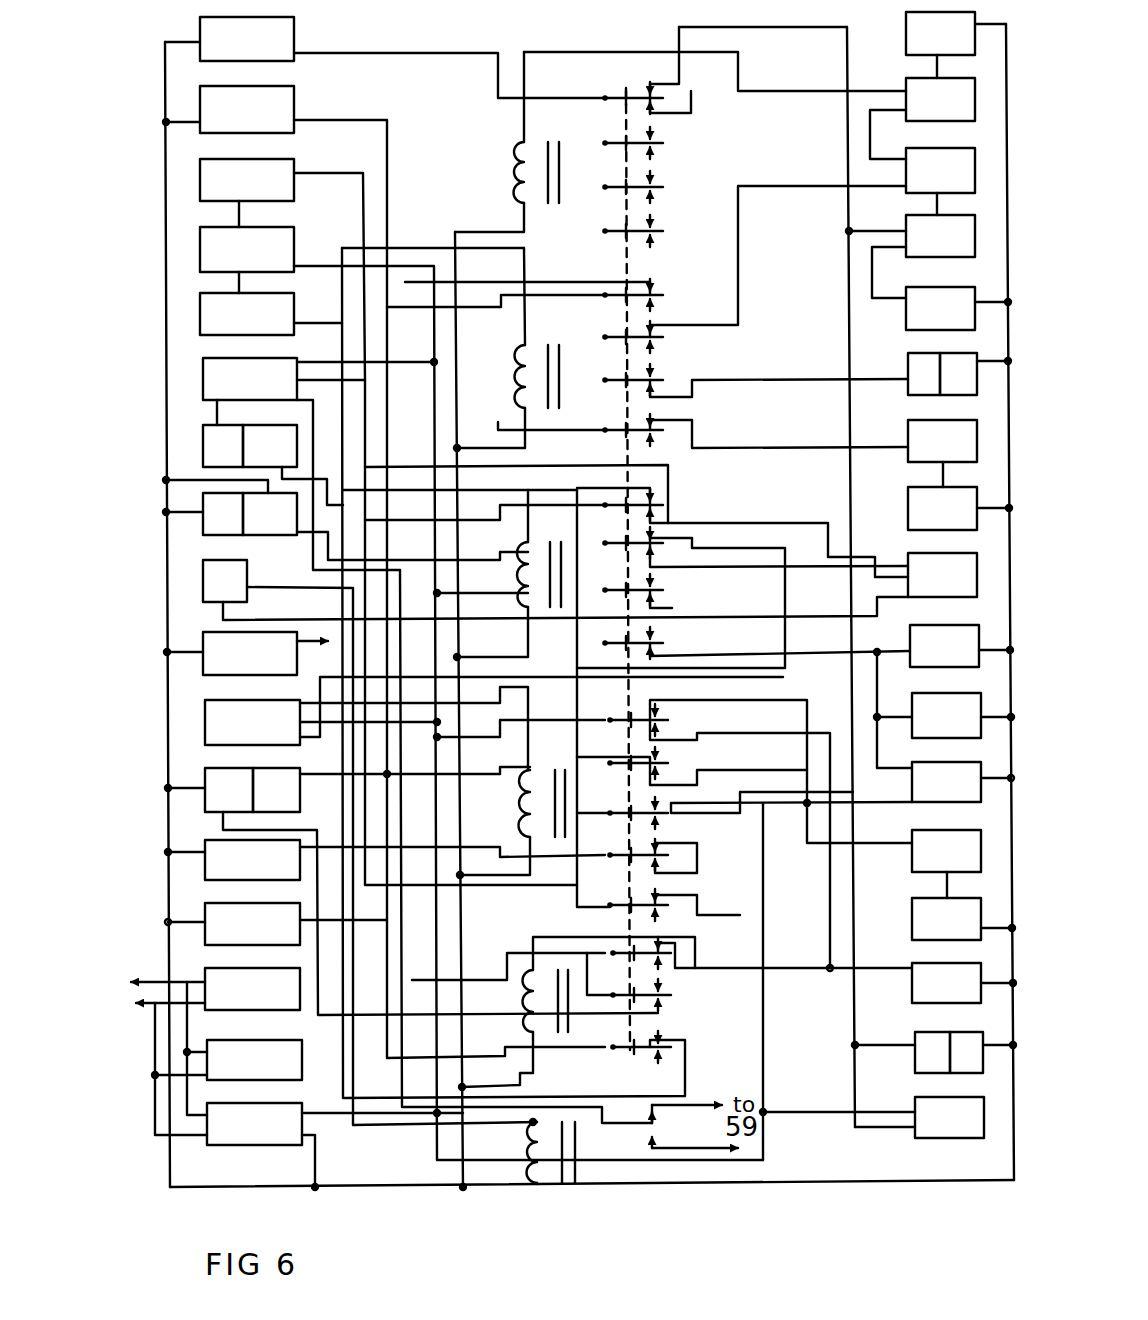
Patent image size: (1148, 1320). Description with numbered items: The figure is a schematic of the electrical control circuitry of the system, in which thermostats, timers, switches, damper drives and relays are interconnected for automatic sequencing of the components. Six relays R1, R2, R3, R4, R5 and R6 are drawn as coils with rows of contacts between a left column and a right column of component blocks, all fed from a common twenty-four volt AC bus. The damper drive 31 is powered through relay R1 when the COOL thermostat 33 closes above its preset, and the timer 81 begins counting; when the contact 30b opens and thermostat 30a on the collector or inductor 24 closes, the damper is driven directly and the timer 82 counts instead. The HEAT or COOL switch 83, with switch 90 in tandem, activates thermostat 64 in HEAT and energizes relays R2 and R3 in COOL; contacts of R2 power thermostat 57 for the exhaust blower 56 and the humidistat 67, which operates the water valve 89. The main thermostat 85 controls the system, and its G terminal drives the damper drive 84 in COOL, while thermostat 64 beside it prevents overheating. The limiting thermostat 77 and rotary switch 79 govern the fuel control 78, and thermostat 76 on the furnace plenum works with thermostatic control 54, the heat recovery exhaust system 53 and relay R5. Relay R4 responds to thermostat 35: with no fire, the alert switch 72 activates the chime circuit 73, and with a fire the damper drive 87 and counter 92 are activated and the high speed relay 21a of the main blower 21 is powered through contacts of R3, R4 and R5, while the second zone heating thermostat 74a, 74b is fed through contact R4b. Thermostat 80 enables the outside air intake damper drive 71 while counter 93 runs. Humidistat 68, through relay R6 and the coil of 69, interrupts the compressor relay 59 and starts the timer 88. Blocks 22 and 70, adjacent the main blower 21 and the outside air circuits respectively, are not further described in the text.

The damper drive 31 is at (385, 57).
The damper drive 87 is at (384, 572).
The thermostat 64 is at (282, 269).
The switch 90 is at (481, 680).
The HEAT or COOL switch 83 is at (442, 673).
The main thermostat 85 is at (555, 738).
The thermostat 77 is at (223, 433).
The fuel control 78 is at (410, 465).
The timer 88 is at (215, 506).
The damper drive 84 is at (385, 526).
The relay 69 is at (203, 532).
The humidistat 68 is at (555, 842).
The compressor relay 59 is at (246, 653).
The thermostat 35 is at (494, 723).
The block 74a is at (411, 891).
The block 74b is at (391, 789).
The high speed relay 21a is at (385, 860).
The rotary switch 79 is at (275, 924).
The block 22 is at (198, 1051).
The main blower 21 is at (227, 1060).
The collector or inductor 24 is at (335, 1144).
The timer 81 is at (956, 33).
The thermostat 33 is at (749, 105).
The thermostat contact 30b is at (812, 242).
The thermostat 30a is at (910, 256).
The timer 82 is at (958, 308).
The thermostatic control 57 is at (830, 375).
The blower 56 is at (958, 374).
The humidistat 67 is at (813, 441).
The water valve 89 is at (960, 496).
The thermostat 80 is at (813, 570).
The outside air intake damper drive 71 is at (831, 646).
The counter 93 is at (944, 710).
The block 70 is at (842, 787).
The alert switch 72 is at (815, 799).
The fireplace chime circuit 73 is at (963, 919).
The counter 92 is at (833, 861).
The thermostatic control 54 is at (901, 1052).
The heat recovery exhaust system 53 is at (983, 1052).
The thermostat 76 is at (872, 1117).
The relay R1 is at (618, 137).
The relay R2 is at (631, 347).
The relay R3 is at (651, 622).
The relay R4 is at (663, 803).
The relay R5 is at (677, 1000).
The relay R6 is at (593, 1170).